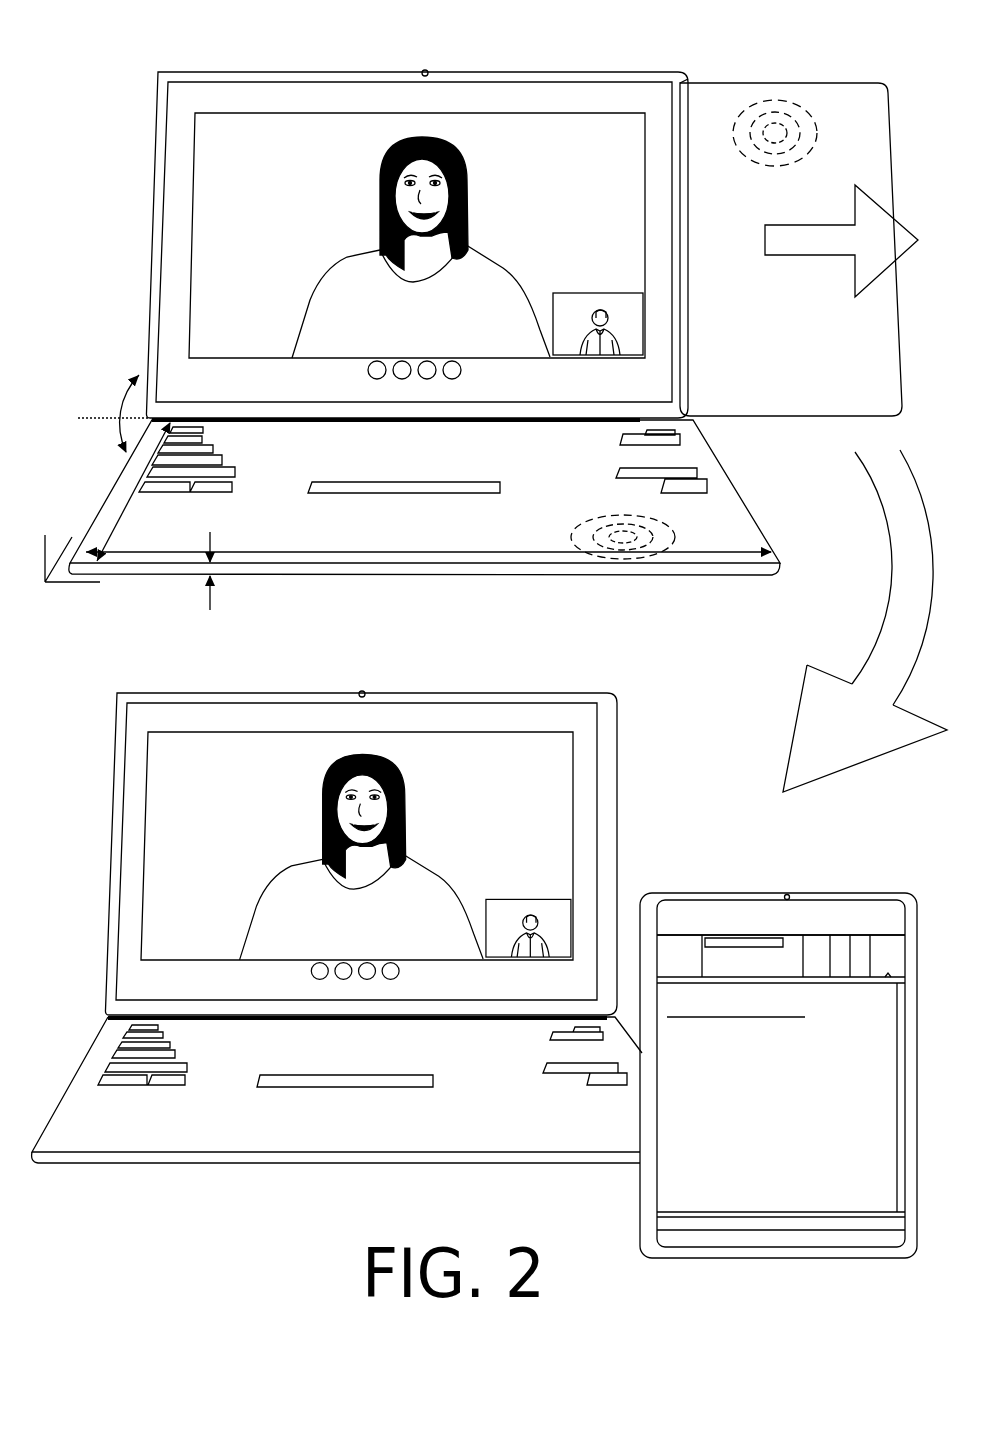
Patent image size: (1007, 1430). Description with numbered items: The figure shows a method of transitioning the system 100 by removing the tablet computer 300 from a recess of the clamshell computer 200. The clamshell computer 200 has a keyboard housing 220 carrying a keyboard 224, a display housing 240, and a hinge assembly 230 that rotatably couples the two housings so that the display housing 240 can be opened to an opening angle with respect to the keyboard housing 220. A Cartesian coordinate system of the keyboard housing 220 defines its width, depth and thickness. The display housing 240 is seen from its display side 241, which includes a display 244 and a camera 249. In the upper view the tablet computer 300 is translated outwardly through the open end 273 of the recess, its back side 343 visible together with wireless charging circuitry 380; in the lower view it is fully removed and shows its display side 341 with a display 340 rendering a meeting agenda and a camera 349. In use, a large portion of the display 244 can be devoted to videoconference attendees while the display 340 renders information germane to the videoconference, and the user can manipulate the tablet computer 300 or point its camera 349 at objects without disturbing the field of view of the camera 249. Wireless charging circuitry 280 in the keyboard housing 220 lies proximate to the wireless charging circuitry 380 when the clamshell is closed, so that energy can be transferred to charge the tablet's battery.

The system 100 is at (233, 36).
The clamshell computer 200 is at (147, 63).
The keyboard housing 220 is at (755, 532).
The keyboard 224 is at (435, 465).
The hinge assembly 230 is at (510, 426).
The display housing 240 is at (478, 72).
The display side 241 is at (220, 390).
The display 244 is at (290, 190).
The camera 249 is at (425, 69).
The open end 273 is at (689, 78).
The wireless charging circuitry 280 is at (593, 520).
The tablet computer 300 is at (832, 83).
The display 340 is at (798, 1108).
The display side 341 is at (703, 928).
The back side 343 is at (808, 330).
The camera 349 is at (787, 892).
The wireless charging circuitry 380 is at (763, 166).